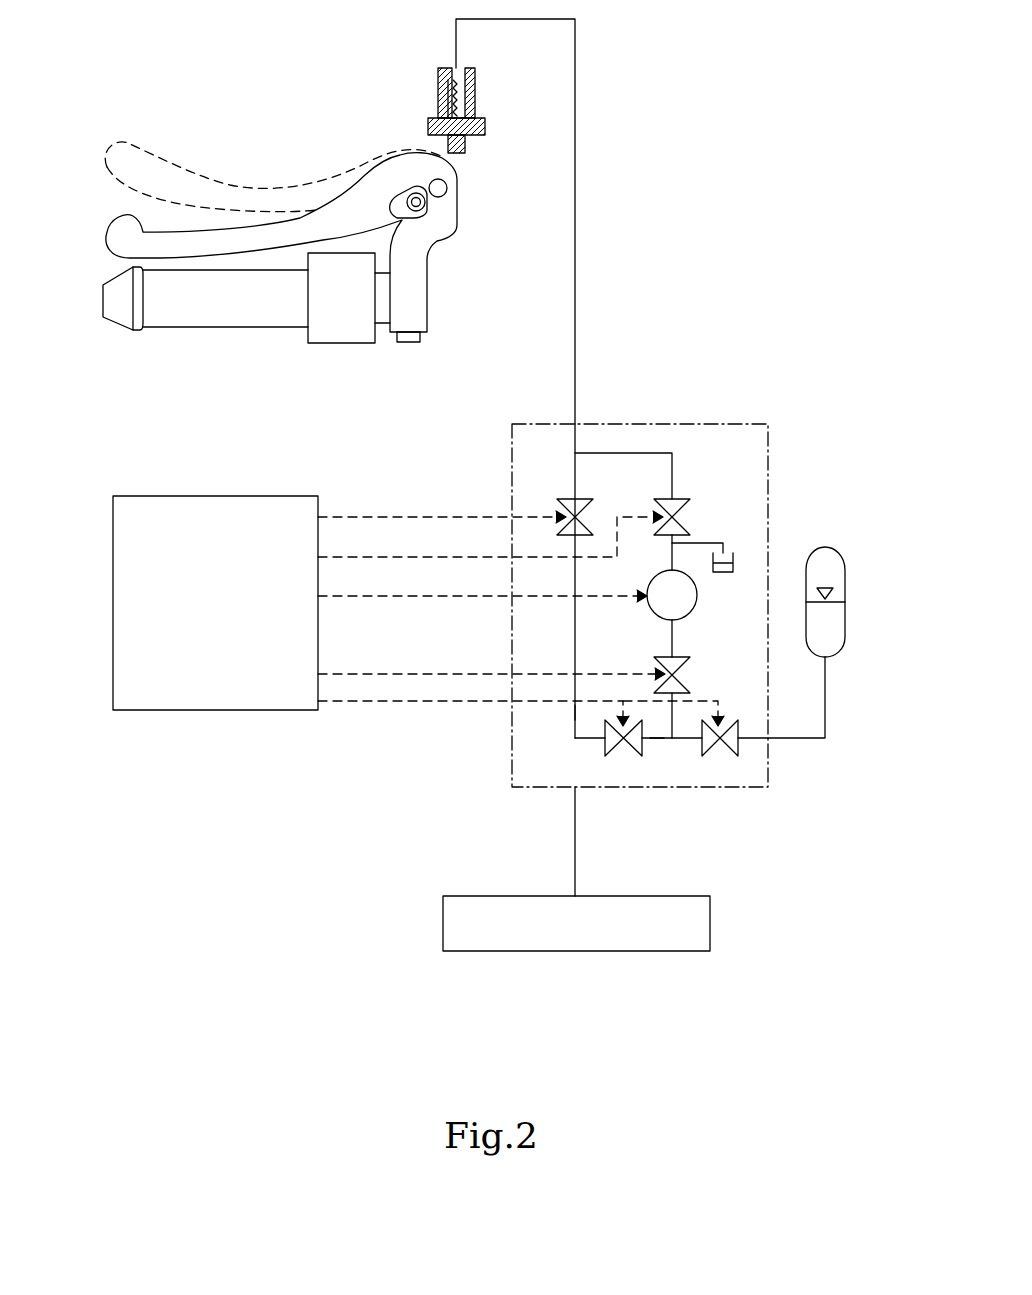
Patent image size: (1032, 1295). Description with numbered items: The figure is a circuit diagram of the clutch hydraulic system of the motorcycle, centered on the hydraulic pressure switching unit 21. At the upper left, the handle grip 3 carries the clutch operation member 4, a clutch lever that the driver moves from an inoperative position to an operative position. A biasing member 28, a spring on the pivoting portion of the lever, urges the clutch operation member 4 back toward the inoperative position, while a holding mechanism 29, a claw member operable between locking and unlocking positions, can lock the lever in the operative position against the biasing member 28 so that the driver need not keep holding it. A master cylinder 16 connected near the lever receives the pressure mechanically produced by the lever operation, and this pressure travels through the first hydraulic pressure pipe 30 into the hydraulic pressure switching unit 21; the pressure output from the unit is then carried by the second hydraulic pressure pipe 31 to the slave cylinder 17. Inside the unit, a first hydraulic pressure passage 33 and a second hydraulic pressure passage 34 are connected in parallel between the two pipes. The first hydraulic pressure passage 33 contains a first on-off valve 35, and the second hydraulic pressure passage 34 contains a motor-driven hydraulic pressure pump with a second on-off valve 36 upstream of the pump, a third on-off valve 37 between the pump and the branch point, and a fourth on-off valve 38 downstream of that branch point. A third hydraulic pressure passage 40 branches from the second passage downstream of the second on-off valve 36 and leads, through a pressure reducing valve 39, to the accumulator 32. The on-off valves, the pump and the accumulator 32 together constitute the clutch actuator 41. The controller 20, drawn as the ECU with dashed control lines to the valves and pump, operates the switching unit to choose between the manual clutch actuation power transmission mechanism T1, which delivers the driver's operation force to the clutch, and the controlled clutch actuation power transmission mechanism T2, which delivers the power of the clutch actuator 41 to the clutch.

The grip 3 is at (217, 322).
The clutch operation member 4 is at (127, 222).
The master cylinder 16 is at (438, 95).
The slave cylinder 17 is at (652, 951).
The controller 20 is at (228, 710).
The hydraulic pressure switching unit 21 is at (726, 423).
The biasing member 28 is at (457, 203).
The holding mechanism 29 is at (404, 209).
The first hydraulic pressure pipe 30 is at (575, 143).
The second hydraulic pressure pipe 31 is at (575, 810).
The accumulator 32 is at (847, 572).
The first hydraulic pressure passage 33 is at (575, 627).
The second hydraulic pressure passage 34 is at (628, 453).
The first on-off valve 35 is at (566, 498).
The second on-off valve 36 is at (680, 497).
The third on-off valve 37 is at (680, 656).
The fourth on-off valve 38 is at (617, 753).
The pressure reducing valve 39 is at (722, 753).
The third hydraulic pressure passage 40 is at (792, 740).
The clutch actuator 41 is at (707, 593).
The manual clutch actuation power transmission mechanism T1 is at (573, 713).
The controlled clutch actuation power transmission mechanism T2 is at (657, 743).